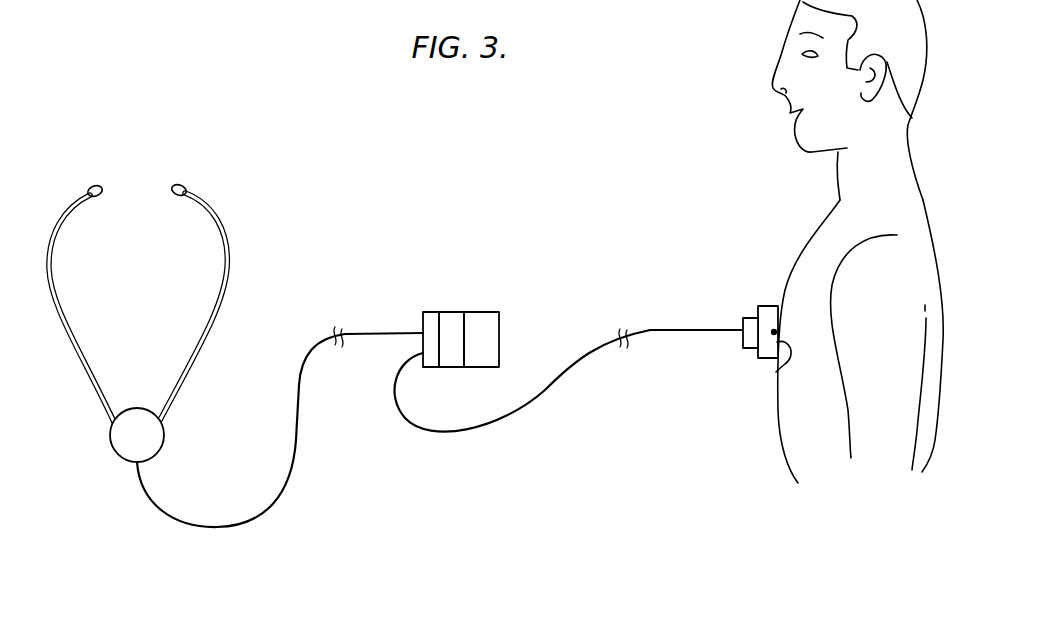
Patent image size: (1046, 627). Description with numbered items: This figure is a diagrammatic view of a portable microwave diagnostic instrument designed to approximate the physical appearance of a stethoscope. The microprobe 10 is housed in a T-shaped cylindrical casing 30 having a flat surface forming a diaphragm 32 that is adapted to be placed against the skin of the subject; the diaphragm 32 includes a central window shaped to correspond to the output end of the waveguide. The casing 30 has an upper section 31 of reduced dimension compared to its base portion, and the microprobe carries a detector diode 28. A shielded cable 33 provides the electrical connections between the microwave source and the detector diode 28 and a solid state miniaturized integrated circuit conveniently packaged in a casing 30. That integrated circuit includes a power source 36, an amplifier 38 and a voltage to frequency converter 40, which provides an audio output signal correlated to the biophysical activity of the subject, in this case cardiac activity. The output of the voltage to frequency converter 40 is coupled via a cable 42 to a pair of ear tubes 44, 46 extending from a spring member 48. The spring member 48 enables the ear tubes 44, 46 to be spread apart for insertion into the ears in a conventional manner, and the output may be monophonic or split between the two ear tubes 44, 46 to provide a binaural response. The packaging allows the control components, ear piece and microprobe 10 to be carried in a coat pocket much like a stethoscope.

The microprobe 10 is at (728, 348).
The detector diode 28 is at (778, 331).
The T-shaped cylindrical casing 30 is at (767, 308).
The upper section of casing 31 is at (743, 325).
The diaphragm 32 is at (787, 363).
The shielded cable 33 is at (659, 328).
The power source 36 is at (433, 312).
The amplifier 38 is at (455, 318).
The voltage to frequency converter 40 is at (482, 350).
The cable 42 is at (370, 333).
The ear tube 44 is at (58, 296).
The ear tube 46 is at (222, 277).
The spring member 48 is at (133, 420).